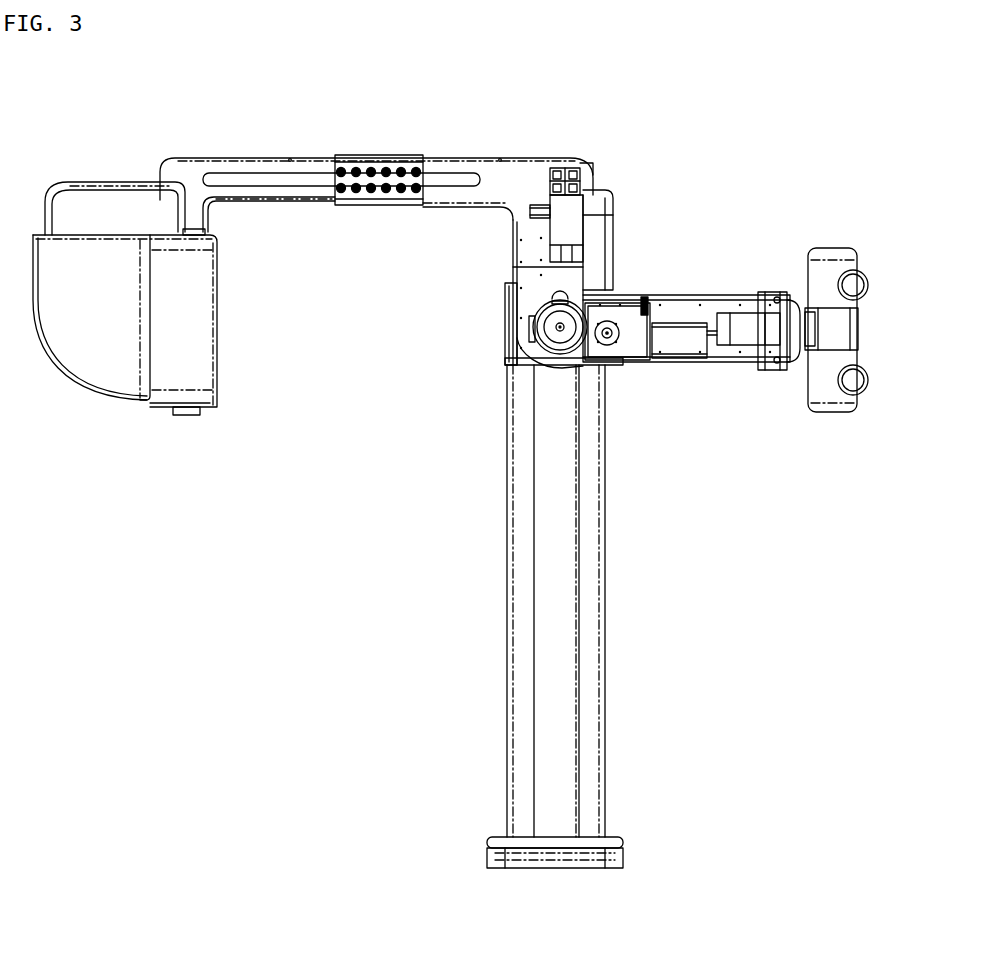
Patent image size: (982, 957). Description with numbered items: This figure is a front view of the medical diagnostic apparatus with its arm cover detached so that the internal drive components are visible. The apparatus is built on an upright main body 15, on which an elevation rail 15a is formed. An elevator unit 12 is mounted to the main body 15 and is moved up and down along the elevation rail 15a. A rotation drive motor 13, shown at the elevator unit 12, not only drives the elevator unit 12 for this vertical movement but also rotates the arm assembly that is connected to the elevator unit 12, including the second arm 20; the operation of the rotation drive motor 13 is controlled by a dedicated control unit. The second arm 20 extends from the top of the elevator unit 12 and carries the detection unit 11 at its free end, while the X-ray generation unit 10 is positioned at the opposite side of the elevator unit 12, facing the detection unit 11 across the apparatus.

The X-ray generation unit 10 is at (822, 352).
The detection unit 11 is at (217, 322).
The elevator unit 12 is at (528, 285).
The rotation drive motor 13 is at (530, 340).
The main body 15 is at (606, 605).
The elevation rail 15a is at (536, 540).
The second arm 20 is at (280, 148).